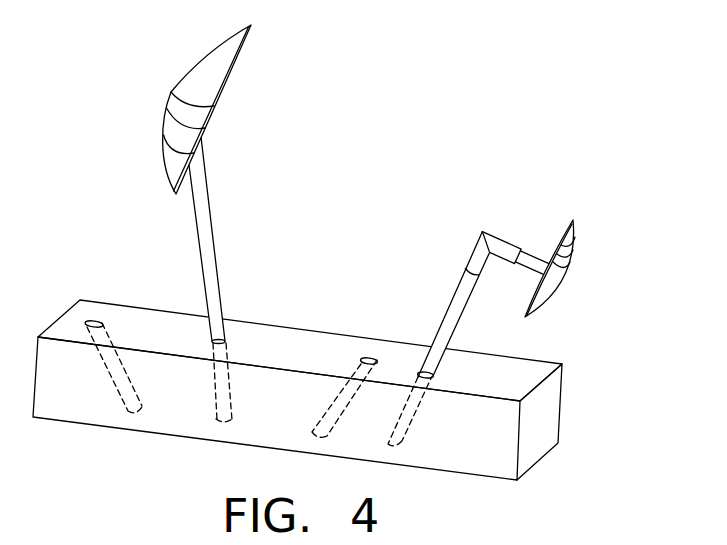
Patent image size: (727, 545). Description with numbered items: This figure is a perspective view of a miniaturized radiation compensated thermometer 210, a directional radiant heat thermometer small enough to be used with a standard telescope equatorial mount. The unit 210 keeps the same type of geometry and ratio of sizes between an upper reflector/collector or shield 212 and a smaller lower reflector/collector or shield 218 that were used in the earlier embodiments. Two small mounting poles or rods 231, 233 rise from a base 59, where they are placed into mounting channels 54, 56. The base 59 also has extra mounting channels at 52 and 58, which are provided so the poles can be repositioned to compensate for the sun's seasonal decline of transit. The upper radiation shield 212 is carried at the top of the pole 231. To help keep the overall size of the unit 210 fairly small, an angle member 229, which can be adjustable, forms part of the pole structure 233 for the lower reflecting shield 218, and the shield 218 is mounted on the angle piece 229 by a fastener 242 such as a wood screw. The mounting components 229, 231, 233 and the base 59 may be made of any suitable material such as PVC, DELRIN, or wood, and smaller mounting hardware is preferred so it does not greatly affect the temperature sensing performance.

The miniaturized radiation compensated thermometer 210 is at (198, 184).
The upper reflector/collector (or shield) 212 is at (245, 114).
The mounting pole (or rod) 231 is at (210, 242).
The lower reflector/collector (or shield) 218 is at (549, 280).
The angle member 229 is at (481, 233).
The mounting pole (or rod) 233 is at (453, 317).
The fastener 242 is at (563, 277).
The base 59 is at (547, 397).
The extra mounting channel 52 is at (115, 387).
The mounting channel 54 is at (216, 415).
The mounting channel 56 is at (422, 420).
The extra mounting channel 58 is at (326, 403).